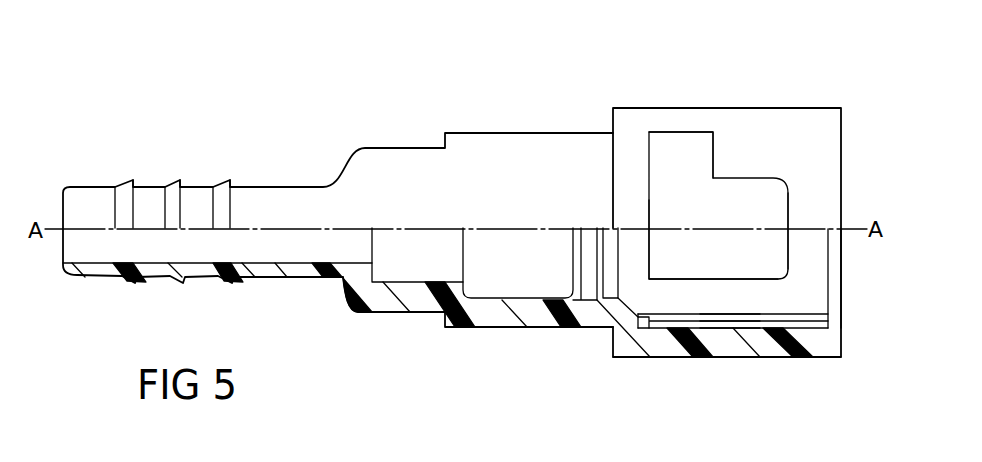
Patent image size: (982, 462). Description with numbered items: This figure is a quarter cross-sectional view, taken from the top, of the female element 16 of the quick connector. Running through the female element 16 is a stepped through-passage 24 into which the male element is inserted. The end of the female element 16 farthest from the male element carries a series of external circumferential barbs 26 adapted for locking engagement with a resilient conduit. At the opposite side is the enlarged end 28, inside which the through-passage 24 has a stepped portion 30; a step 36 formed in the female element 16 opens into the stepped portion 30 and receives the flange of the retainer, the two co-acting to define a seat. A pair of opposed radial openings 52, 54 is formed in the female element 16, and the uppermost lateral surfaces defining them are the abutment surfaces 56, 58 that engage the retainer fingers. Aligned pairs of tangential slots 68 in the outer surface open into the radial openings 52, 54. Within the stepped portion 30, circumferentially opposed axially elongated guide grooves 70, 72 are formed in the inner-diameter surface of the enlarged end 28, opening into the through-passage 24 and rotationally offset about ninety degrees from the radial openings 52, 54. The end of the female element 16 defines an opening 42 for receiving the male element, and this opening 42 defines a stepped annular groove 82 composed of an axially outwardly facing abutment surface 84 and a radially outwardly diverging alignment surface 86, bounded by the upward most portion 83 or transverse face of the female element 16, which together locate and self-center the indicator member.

The female element 16 is at (496, 106).
The stepped through-passage 24 is at (73, 252).
The external circumferential barbs 26 is at (230, 182).
The enlarged end 28 is at (783, 113).
The stepped portion 30 is at (710, 300).
The step 36 is at (650, 331).
The opening 42 is at (812, 327).
The radial opening 52 is at (745, 183).
The radial opening 54 is at (702, 276).
The abutment surface 56 is at (791, 199).
The abutment surface 58 is at (783, 231).
The tangential slots 68 is at (713, 152).
The guide groove 70 is at (747, 320).
The guide groove 72 is at (747, 320).
The stepped annular groove 82 is at (832, 267).
The upward most portion 83 is at (841, 353).
The abutment surface 84 is at (833, 327).
The alignment surface 86 is at (835, 335).